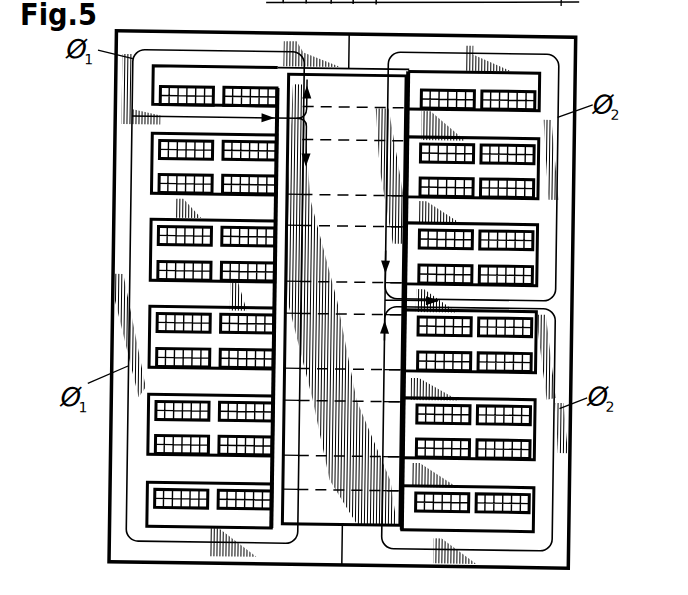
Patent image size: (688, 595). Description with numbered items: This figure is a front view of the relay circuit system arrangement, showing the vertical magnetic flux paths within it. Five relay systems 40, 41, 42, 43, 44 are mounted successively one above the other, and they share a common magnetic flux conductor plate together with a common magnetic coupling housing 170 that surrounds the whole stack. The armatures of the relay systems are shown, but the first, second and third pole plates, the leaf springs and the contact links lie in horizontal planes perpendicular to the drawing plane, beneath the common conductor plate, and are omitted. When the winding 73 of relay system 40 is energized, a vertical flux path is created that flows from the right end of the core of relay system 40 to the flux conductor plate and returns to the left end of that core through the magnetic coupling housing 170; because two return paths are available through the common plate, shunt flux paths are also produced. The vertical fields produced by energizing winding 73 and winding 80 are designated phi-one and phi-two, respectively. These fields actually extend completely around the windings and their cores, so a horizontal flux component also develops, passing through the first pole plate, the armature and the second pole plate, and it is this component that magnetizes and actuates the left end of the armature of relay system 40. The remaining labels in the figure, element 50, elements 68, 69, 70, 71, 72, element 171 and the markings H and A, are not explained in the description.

The relay system 40 is at (296, 125).
The relay system 41 is at (214, 178).
The relay system 42 is at (213, 264).
The relay system 43 is at (212, 351).
The relay system 44 is at (210, 439).
The input structure 50 is at (247, 2).
The input gate electrode 68 is at (276, 13).
The input gate electrode 69 is at (296, 13).
The input gate electrode 70 is at (319, 14).
The input gate electrode 71 is at (340, 14).
The input gate electrode 72 is at (361, 14).
The winding 73 is at (157, 96).
The winding 80 is at (533, 268).
The common magnetic coupling housing 170 is at (570, 46).
The phase two clock bus 171 is at (516, 126).
The electrode cell H is at (157, 151).
The charge transfer direction A is at (276, 160).